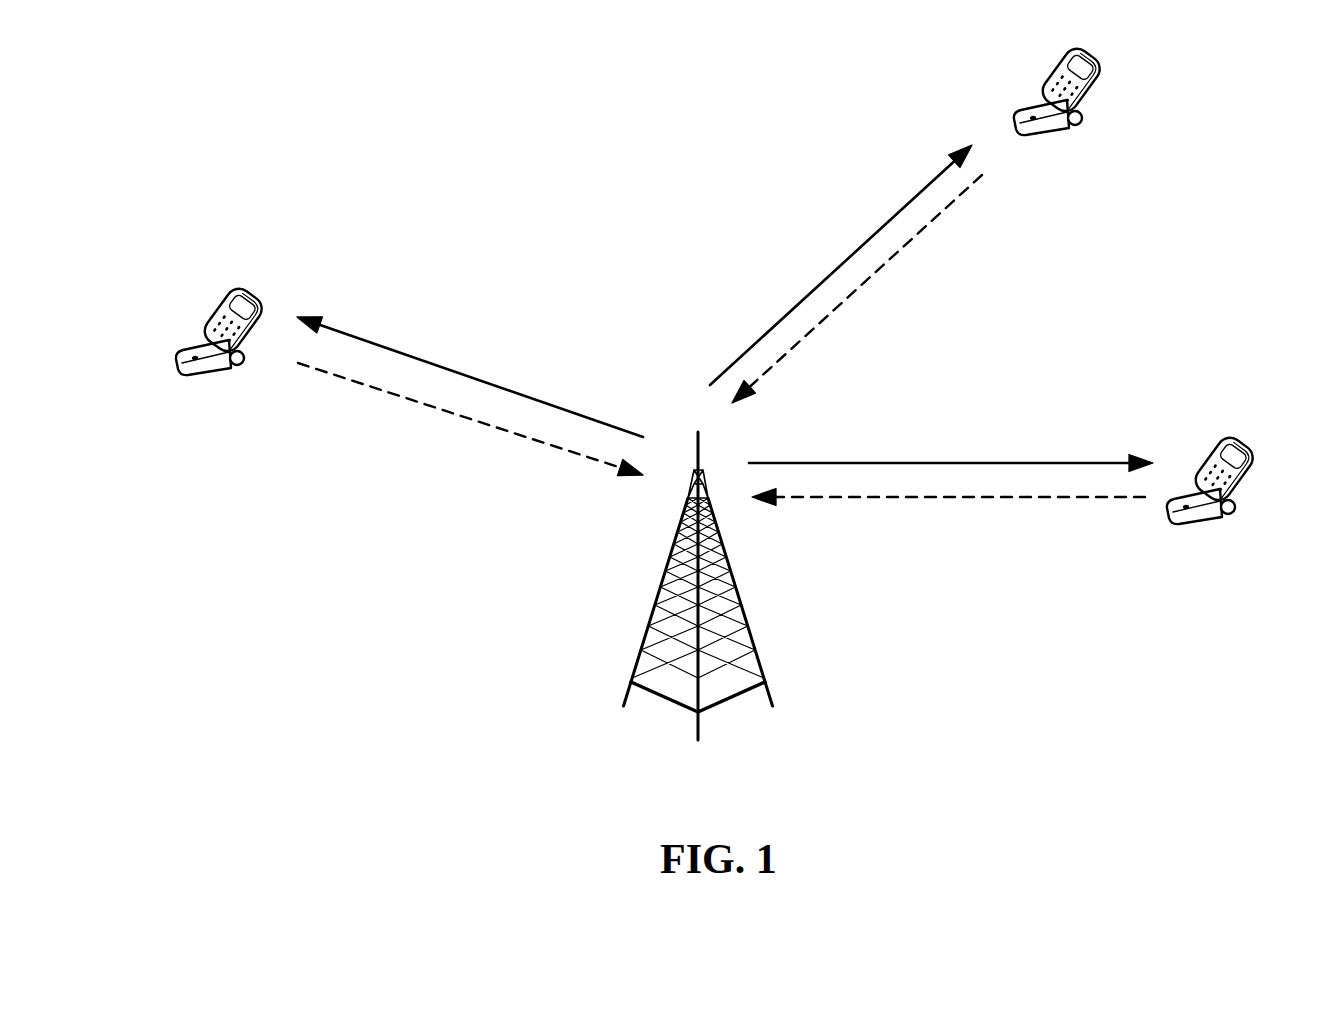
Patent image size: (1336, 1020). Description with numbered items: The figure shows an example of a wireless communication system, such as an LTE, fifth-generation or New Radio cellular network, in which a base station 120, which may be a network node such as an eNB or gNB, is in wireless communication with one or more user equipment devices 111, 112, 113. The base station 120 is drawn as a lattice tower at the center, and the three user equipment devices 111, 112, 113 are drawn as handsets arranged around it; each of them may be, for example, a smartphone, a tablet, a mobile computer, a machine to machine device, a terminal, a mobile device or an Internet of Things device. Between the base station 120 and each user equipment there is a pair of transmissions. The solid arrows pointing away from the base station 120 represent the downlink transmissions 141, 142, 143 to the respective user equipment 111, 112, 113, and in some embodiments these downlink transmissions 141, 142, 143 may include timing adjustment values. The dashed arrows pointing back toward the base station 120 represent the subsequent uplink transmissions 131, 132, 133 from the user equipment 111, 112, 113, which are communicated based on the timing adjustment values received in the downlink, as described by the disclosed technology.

The user equipment 111 is at (232, 378).
The user equipment 112 is at (1222, 527).
The user equipment 113 is at (1073, 138).
The base station 120 is at (753, 660).
The uplink transmission 131 is at (508, 432).
The uplink transmission 132 is at (913, 498).
The uplink transmission 133 is at (883, 263).
The downlink transmission 141 is at (405, 355).
The downlink transmission 142 is at (1062, 460).
The downlink transmission 143 is at (888, 215).